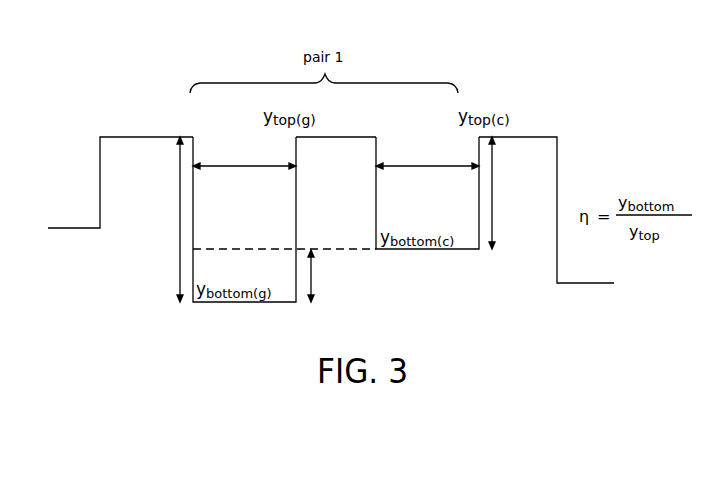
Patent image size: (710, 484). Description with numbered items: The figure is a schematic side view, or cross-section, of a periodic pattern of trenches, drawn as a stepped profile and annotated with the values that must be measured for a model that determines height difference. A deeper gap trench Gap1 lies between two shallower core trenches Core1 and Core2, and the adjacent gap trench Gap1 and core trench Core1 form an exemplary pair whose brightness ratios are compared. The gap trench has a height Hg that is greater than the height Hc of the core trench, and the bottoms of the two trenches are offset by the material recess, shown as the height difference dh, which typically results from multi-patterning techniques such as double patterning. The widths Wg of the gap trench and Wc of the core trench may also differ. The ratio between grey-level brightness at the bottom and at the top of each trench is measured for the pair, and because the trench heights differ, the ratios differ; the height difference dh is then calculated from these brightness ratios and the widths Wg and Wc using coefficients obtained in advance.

The core trench Core1 is at (427, 207).
The core trench Core2 is at (120, 197).
The gap trench Gap1 is at (244, 235).
The gap trench height Hg is at (163, 219).
The core trench height Hc is at (502, 193).
The gap trench width Wg is at (244, 151).
The core trench width Wc is at (427, 151).
The height difference dh is at (323, 276).